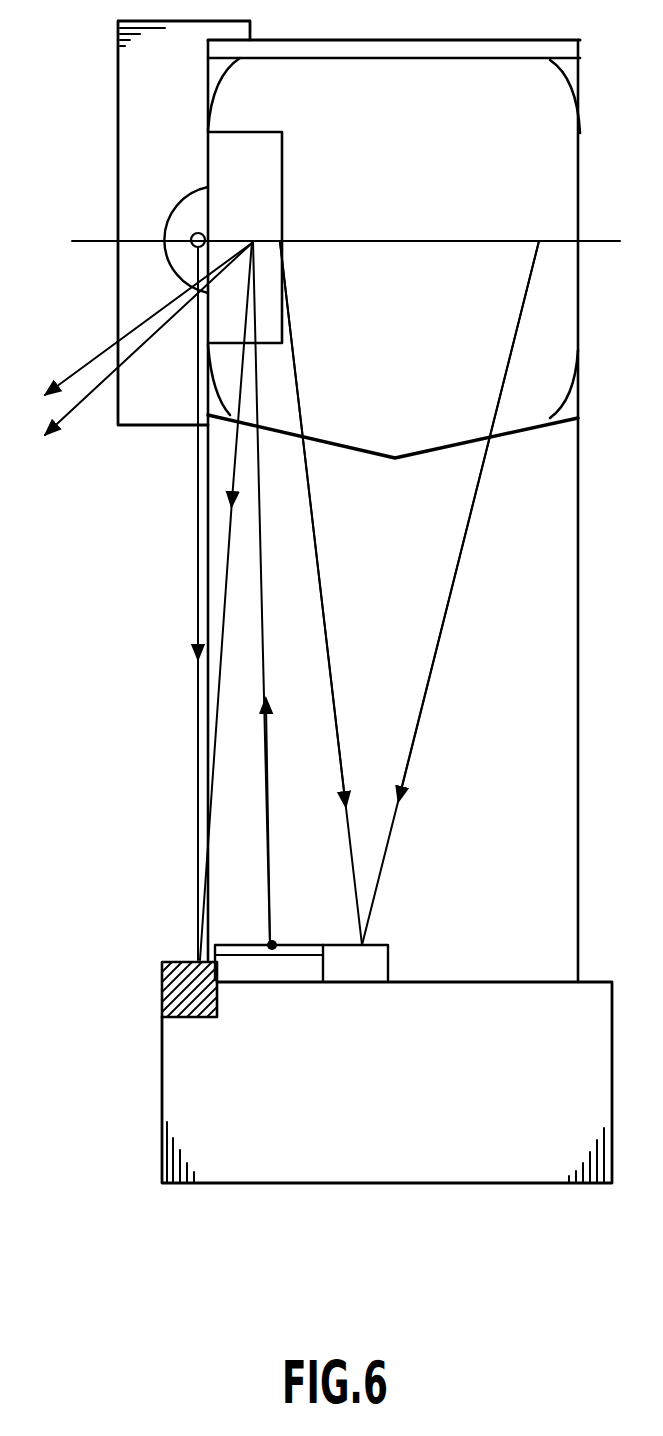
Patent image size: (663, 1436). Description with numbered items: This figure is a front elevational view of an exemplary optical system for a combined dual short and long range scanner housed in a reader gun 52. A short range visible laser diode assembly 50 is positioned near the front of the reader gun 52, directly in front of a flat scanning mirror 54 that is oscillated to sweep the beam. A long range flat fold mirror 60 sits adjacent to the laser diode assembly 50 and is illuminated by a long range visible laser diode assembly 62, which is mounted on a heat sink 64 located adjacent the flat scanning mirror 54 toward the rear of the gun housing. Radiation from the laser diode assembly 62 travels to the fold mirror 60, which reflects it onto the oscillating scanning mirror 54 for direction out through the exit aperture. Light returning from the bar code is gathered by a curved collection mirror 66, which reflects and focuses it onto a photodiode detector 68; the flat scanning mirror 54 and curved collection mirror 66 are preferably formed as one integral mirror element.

The short range visible laser diode assembly 50 is at (300, 945).
The reader gun 52 is at (390, 674).
The flat scanning mirror 54 is at (208, 155).
The long range flat fold mirror 60 is at (162, 975).
The long range visible laser diode assembly 62 is at (148, 265).
The heat sink 64 is at (118, 212).
The curved collection mirror 66 is at (392, 328).
The photodiode detector 68 is at (388, 960).